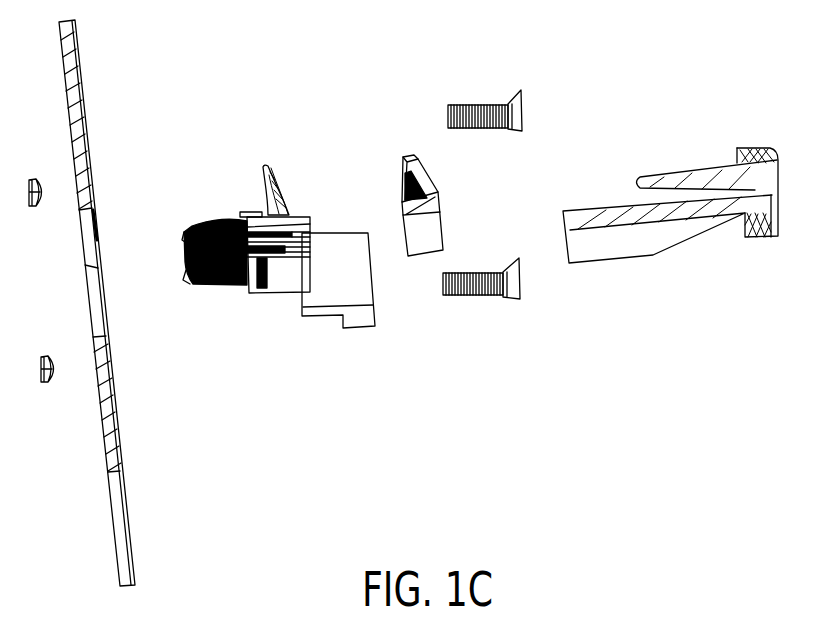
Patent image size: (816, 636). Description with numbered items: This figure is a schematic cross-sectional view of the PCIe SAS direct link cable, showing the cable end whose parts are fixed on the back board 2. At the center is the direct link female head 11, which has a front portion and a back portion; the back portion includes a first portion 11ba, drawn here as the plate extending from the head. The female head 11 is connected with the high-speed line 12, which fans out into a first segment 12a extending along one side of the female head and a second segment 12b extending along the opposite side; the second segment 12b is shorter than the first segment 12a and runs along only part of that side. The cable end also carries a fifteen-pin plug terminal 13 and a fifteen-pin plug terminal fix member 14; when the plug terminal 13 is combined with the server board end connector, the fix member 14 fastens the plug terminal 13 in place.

The back board 2 is at (88, 128).
The direct link female head 11 is at (280, 282).
The first portion 11ba is at (360, 317).
The high-speed line 12 is at (670, 169).
The first segment 12a is at (598, 215).
The second segment 12b is at (678, 177).
The 15pin plug terminal 13 is at (280, 192).
The 15pin plug terminal fix member 14 is at (412, 157).